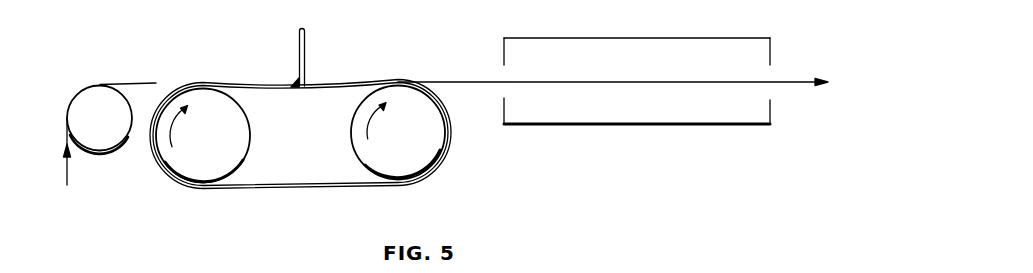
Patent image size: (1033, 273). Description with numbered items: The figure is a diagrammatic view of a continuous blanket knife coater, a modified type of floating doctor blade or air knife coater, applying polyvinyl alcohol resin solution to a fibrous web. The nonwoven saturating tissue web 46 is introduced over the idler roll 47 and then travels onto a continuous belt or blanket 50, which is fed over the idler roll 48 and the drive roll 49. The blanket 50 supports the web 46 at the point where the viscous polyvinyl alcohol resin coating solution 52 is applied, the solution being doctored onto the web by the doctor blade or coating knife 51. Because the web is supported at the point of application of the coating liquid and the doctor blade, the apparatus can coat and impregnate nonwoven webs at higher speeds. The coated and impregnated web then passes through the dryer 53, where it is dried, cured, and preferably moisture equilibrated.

The nonwoven saturating tissue web 46 is at (67, 183).
The idler roll 47 is at (108, 151).
The idler roll 48 is at (235, 149).
The drive roll 49 is at (372, 151).
The continuous belt or blanket 50 is at (300, 187).
The doctor blade or coating knife 51 is at (299, 46).
The viscous polyvinyl alcohol resin coating solution 52 is at (293, 80).
The dryer 53 is at (577, 124).